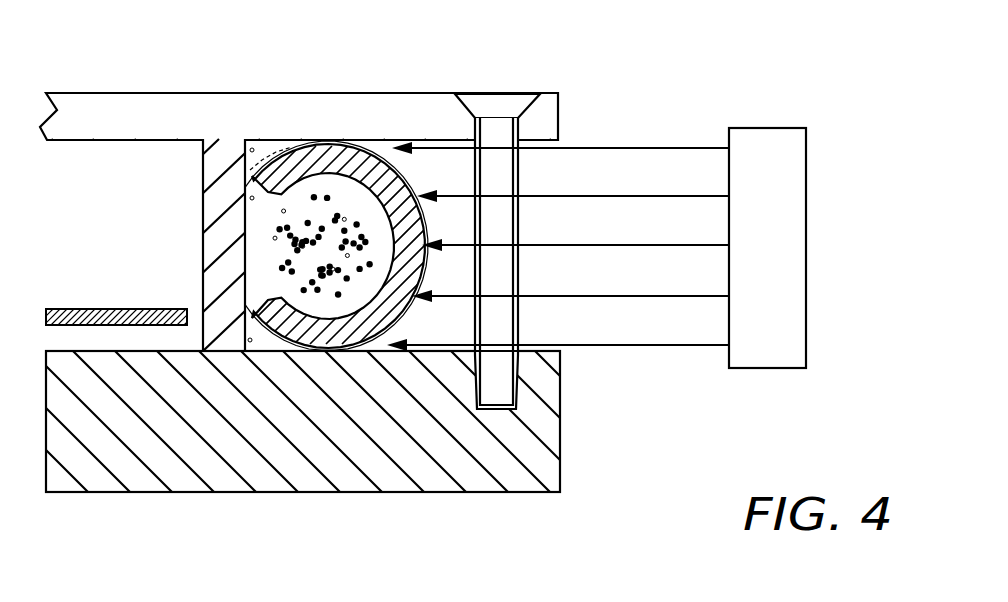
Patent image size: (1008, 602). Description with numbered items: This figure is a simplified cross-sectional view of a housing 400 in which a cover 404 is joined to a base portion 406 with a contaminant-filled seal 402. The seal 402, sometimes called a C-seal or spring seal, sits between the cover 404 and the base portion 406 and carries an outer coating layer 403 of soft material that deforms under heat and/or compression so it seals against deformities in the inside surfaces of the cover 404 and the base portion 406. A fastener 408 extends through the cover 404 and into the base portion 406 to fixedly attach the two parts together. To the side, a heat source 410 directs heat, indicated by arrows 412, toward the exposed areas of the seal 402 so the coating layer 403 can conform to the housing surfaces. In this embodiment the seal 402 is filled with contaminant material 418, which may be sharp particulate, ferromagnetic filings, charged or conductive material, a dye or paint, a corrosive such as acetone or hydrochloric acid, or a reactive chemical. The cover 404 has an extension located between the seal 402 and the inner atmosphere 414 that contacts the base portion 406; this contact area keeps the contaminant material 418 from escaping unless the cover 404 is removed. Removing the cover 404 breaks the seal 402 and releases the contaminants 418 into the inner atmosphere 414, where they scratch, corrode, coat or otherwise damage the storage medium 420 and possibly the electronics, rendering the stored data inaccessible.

The housing 400 is at (797, 69).
The seal 402 is at (308, 167).
The coating layer 403 is at (262, 150).
The cover 404 is at (127, 93).
The base portion 406 is at (560, 428).
The fastener 408 is at (503, 103).
The heat source 410 is at (803, 192).
The arrows 412 is at (660, 110).
The inner atmosphere 414 is at (90, 214).
The contaminant material 418 is at (258, 262).
The storage medium 420 is at (115, 309).